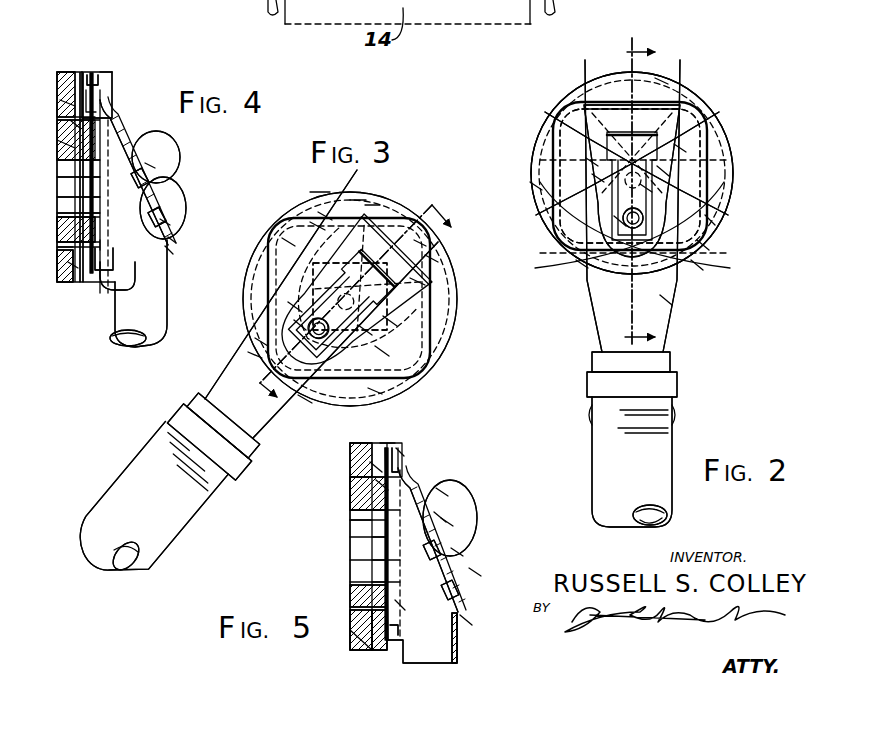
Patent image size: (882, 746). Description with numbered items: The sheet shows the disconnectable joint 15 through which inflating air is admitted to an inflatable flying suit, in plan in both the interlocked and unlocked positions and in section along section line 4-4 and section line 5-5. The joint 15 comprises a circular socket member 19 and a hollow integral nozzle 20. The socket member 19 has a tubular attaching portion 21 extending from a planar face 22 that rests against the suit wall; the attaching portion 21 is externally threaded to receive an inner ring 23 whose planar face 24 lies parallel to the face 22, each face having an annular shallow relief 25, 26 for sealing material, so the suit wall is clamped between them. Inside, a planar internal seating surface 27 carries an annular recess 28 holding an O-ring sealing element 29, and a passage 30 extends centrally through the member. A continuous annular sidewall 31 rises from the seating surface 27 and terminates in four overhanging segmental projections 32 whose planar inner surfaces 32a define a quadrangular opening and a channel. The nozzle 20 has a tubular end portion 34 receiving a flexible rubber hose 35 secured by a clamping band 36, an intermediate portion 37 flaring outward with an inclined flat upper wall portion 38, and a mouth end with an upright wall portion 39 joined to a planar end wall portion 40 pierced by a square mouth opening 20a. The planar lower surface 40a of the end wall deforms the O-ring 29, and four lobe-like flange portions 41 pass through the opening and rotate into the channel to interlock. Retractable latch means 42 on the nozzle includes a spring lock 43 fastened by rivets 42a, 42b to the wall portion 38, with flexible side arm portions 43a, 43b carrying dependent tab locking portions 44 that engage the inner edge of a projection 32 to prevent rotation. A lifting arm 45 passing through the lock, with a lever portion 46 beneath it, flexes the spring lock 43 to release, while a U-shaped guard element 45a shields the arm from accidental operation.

In FIG. 2, the section line 4- 4 is at (618, 193).
In FIG. 3, the section line 5- 5 is at (337, 285).
In FIG. 4, the disconnectable joint 15 is at (46, 228).
In FIG. 3, the disconnectable joint 15 is at (352, 274).
In FIG. 2, the disconnectable joint 15 is at (659, 209).
In FIG. 5, the disconnectable joint 15 is at (439, 532).
In FIG. 4, the socket member 19 is at (85, 36).
In FIG. 3, the socket member 19 is at (304, 176).
In FIG. 2, the socket member 19 is at (660, 173).
In FIG. 5, the socket member 19 is at (405, 422).
In FIG. 4, the hollow integral nozzle 20 is at (173, 293).
In FIG. 3, the hollow integral nozzle 20 is at (259, 370).
In FIG. 2, the hollow integral nozzle 20 is at (603, 293).
In FIG. 5, the hollow integral nozzle 20 is at (413, 649).
In FIG. 4, the mouth opening 20a is at (57, 211).
In FIG. 3, the mouth opening 20a is at (394, 326).
In FIG. 2, the mouth opening 20a is at (673, 176).
In FIG. 5, the mouth opening 20a is at (348, 576).
In FIG. 4, the tubular attaching portion 21 is at (55, 229).
In FIG. 5, the tubular attaching portion 21 is at (346, 493).
In FIG. 4, the planar face 22 is at (44, 247).
In FIG. 5, the planar face 22 is at (340, 433).
In FIG. 4, the inner ring 23 is at (45, 275).
In FIG. 5, the inner ring 23 is at (331, 645).
In FIG. 4, the planar face of inner ring 24 is at (50, 186).
In FIG. 5, the planar face of inner ring 24 is at (347, 646).
In FIG. 4, the annular shallow relief 25 is at (46, 267).
In FIG. 5, the annular shallow relief 25 is at (345, 456).
In FIG. 4, the annular shallow relief 26 is at (44, 102).
In FIG. 5, the annular shallow relief 26 is at (339, 617).
In FIG. 4, the internal seating surface 27 is at (59, 160).
In FIG. 5, the internal seating surface 27 is at (348, 537).
In FIG. 5, the annular recess 28 is at (348, 477).
In FIG. 4, the annular sealing element 29 is at (48, 122).
In FIG. 5, the annular sealing element 29 is at (418, 621).
In FIG. 4, the passage 30 is at (44, 142).
In FIG. 5, the passage 30 is at (338, 518).
In FIG. 4, the annular sidewall 31 is at (74, 180).
In FIG. 3, the annular sidewall 31 is at (345, 183).
In FIG. 2, the annular sidewall 31 is at (717, 275).
In FIG. 5, the annular sidewall 31 is at (429, 437).
In FIG. 4, the overhanging segmental projections 32 is at (121, 155).
In FIG. 3, the overhanging segmental projections 32 is at (348, 293).
In FIG. 2, the overhanging segmental projections 32 is at (647, 254).
In FIG. 4, the planar inner surfaces 32a is at (139, 157).
In FIG. 4, the tubular end portion 34 is at (120, 352).
In FIG. 3, the tubular end portion 34 is at (240, 425).
In FIG. 2, the tubular end portion 34 is at (657, 357).
In FIG. 5, the tubular end portion 34 is at (484, 641).
In FIG. 3, the flexible rubber hose 35 is at (95, 541).
In FIG. 2, the flexible rubber hose 35 is at (686, 513).
In FIG. 3, the clamping band 36 is at (187, 439).
In FIG. 2, the clamping band 36 is at (666, 385).
In FIG. 2, the intermediate portion 37 is at (688, 314).
In FIG. 4, the flat upper wall portion 38 is at (196, 241).
In FIG. 5, the flat upper wall portion 38 is at (492, 496).
In FIG. 3, the upright wall portion 39 is at (317, 408).
In FIG. 2, the upright wall portion 39 is at (721, 255).
In FIG. 5, the upright wall portion 39 is at (409, 542).
In FIG. 4, the end wall portion 40 is at (62, 178).
In FIG. 5, the end wall portion 40 is at (415, 600).
In FIG. 4, the planar lower surface 40a is at (56, 195).
In FIG. 5, the planar lower surface 40a is at (348, 556).
In FIG. 4, the flange portions 41 is at (105, 168).
In FIG. 3, the flange portions 41 is at (337, 298).
In FIG. 2, the flange portions 41 is at (592, 131).
In FIG. 5, the flange portions 41 is at (411, 446).
In FIG. 4, the retractable latch means 42 is at (200, 188).
In FIG. 5, the retractable latch means 42 is at (465, 507).
In FIG. 4, the rivet 42a is at (195, 211).
In FIG. 3, the rivet 42a is at (246, 301).
In FIG. 2, the rivet 42a is at (569, 242).
In FIG. 5, the rivet 42a is at (488, 586).
In FIG. 4, the rivet 42b is at (187, 184).
In FIG. 3, the rivet 42b is at (435, 357).
In FIG. 5, the rivet 42b is at (486, 536).
In FIG. 4, the spring lock 43 is at (192, 260).
In FIG. 2, the spring lock 43 is at (617, 151).
In FIG. 5, the spring lock 43 is at (488, 629).
In FIG. 3, the side arm portion 43a is at (283, 215).
In FIG. 2, the side arm portion 43a is at (542, 147).
In FIG. 4, the side arm portion 43b is at (179, 153).
In FIG. 3, the side arm portion 43b is at (444, 315).
In FIG. 2, the side arm portion 43b is at (726, 129).
In FIG. 5, the side arm portion 43b is at (490, 509).
In FIG. 4, the tab locking portions 44 is at (134, 165).
In FIG. 3, the tab locking portions 44 is at (427, 225).
In FIG. 2, the tab locking portions 44 is at (634, 141).
In FIG. 5, the tab locking portions 44 is at (432, 530).
In FIG. 4, the lifting arm 45 is at (188, 168).
In FIG. 3, the lifting arm 45 is at (424, 336).
In FIG. 2, the lifting arm 45 is at (714, 161).
In FIG. 5, the lifting arm 45 is at (491, 543).
In FIG. 4, the guard element 45a is at (199, 226).
In FIG. 3, the guard element 45a is at (248, 321).
In FIG. 2, the guard element 45a is at (713, 181).
In FIG. 5, the guard element 45a is at (504, 563).
In FIG. 3, the lever portion 46 is at (398, 310).
In FIG. 2, the lever portion 46 is at (576, 157).
In FIG. 5, the lever portion 46 is at (463, 488).